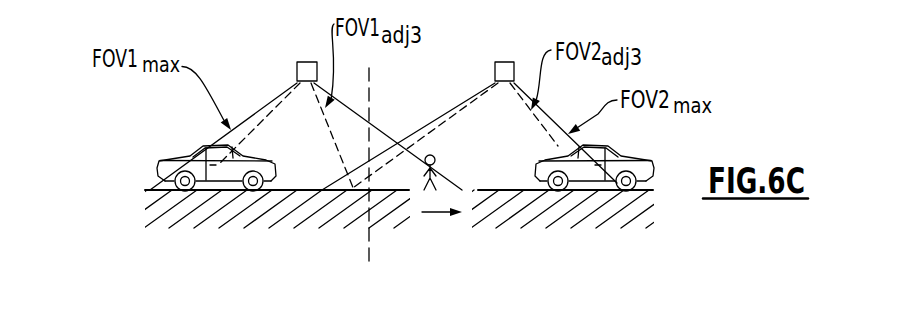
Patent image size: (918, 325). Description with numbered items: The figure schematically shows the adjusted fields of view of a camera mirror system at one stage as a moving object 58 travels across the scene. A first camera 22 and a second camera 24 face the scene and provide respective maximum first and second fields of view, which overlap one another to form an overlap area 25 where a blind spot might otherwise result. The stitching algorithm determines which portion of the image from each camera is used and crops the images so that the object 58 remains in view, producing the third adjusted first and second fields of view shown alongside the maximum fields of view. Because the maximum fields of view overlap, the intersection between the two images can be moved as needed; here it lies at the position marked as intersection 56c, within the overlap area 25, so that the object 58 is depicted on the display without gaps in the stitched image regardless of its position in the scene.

The first camera 22 is at (304, 62).
The second camera 24 is at (506, 62).
The intersection 56c is at (382, 75).
The object 58 is at (451, 151).
The overlap area 25 is at (384, 180).